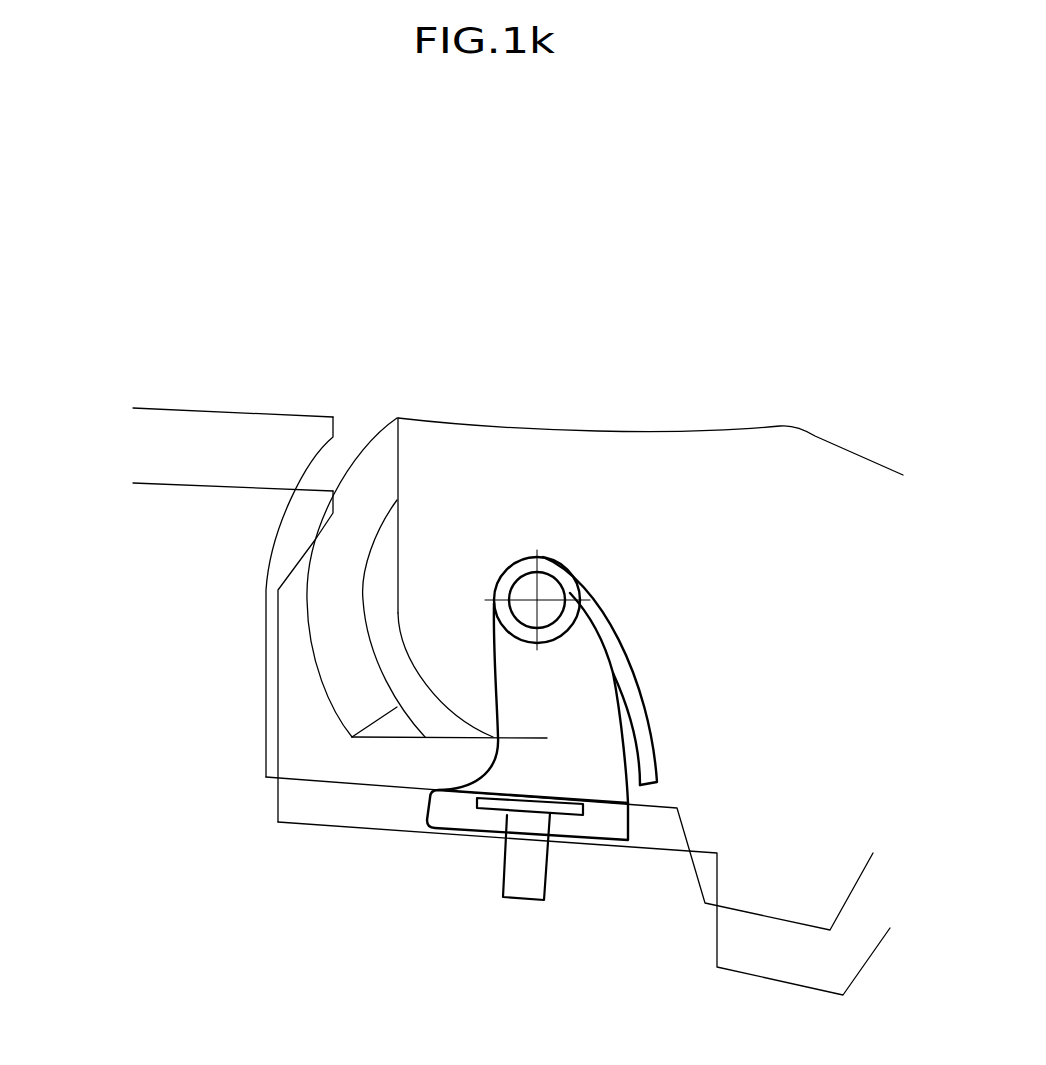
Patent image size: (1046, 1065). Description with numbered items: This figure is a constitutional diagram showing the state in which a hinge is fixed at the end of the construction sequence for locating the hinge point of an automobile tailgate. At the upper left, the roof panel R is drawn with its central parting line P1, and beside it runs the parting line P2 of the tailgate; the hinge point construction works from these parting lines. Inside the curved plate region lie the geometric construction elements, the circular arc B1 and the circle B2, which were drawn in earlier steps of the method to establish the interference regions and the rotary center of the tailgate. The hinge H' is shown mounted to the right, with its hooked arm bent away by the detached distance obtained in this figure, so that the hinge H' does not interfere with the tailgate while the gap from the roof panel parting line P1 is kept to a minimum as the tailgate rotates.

The central parting line P1 is at (333, 417).
The parting line of the tailgate P2 is at (398, 418).
The roof panel R is at (168, 448).
The circular arc B1 is at (313, 661).
The circle B2 is at (363, 620).
The hinge H' is at (611, 695).